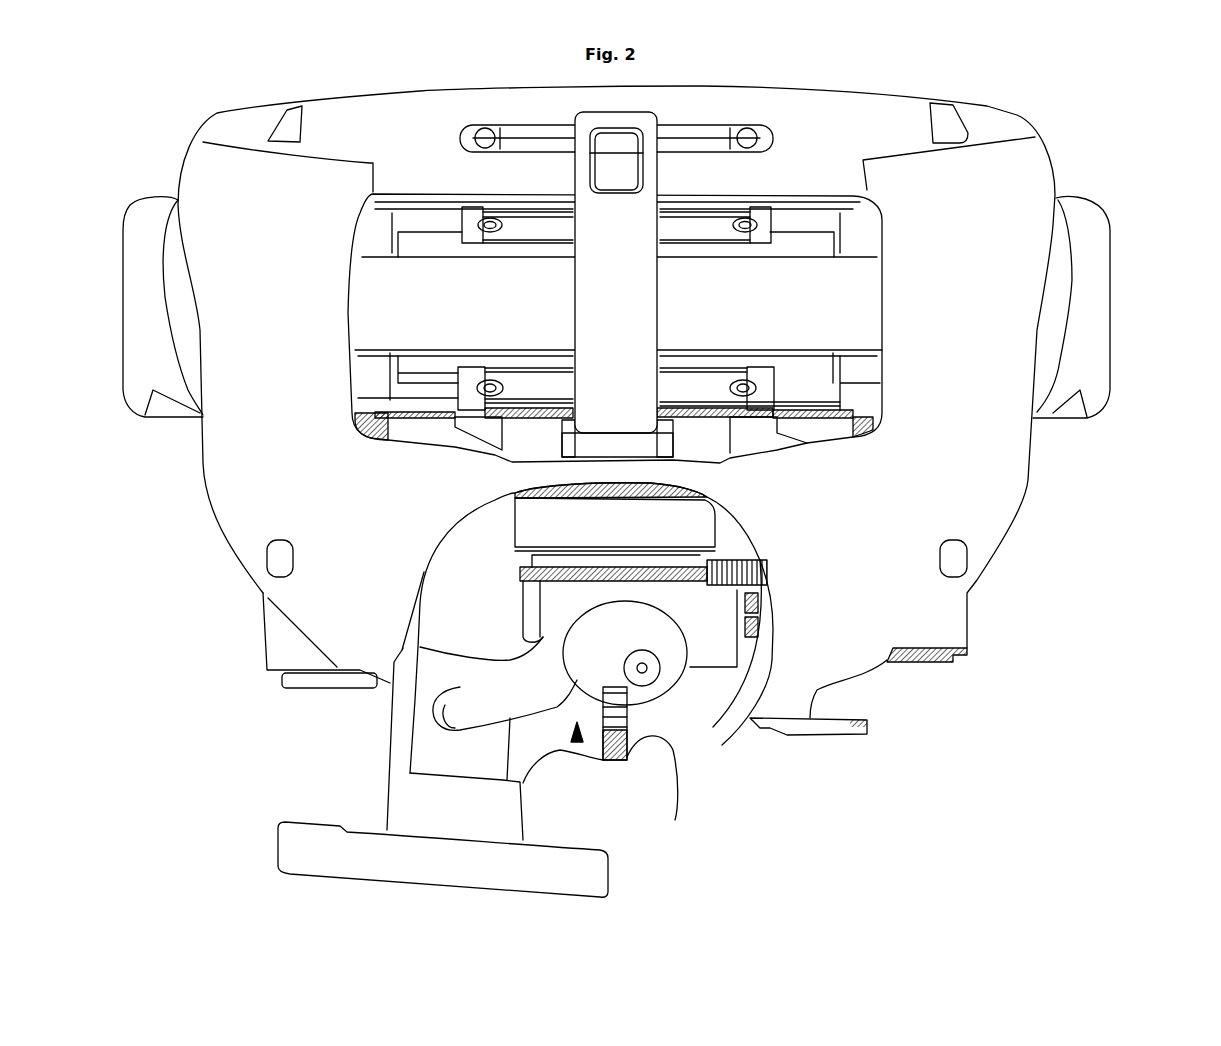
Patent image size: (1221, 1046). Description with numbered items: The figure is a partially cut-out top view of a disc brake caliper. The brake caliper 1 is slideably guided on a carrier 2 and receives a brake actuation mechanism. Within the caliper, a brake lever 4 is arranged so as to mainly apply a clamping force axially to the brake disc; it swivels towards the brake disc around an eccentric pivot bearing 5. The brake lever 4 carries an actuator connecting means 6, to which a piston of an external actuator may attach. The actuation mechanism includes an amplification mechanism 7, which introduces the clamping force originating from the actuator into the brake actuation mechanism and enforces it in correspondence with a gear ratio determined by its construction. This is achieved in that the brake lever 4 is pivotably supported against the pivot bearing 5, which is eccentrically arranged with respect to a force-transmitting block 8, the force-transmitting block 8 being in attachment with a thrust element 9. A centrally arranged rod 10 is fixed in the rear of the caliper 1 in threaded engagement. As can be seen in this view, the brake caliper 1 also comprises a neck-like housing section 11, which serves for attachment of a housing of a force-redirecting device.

The brake caliper 1 is at (1000, 186).
The carrier 2 is at (1092, 292).
The brake lever 4 is at (453, 712).
The eccentric pivot bearing 5 is at (647, 673).
The actuator connecting means 6 is at (443, 743).
The amplification mechanism 7 is at (577, 742).
The force-transmitting block 8 is at (665, 606).
The thrust element 9 is at (677, 530).
The centrally arranged rod 10 is at (612, 804).
The neck-like housing section 11 is at (413, 790).